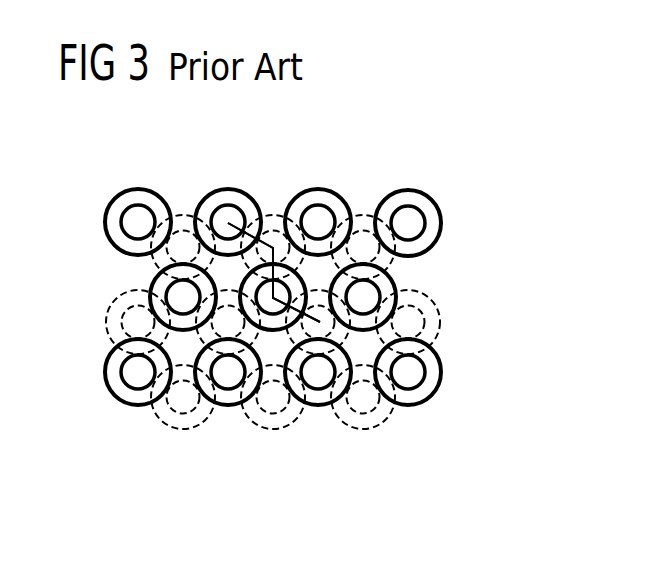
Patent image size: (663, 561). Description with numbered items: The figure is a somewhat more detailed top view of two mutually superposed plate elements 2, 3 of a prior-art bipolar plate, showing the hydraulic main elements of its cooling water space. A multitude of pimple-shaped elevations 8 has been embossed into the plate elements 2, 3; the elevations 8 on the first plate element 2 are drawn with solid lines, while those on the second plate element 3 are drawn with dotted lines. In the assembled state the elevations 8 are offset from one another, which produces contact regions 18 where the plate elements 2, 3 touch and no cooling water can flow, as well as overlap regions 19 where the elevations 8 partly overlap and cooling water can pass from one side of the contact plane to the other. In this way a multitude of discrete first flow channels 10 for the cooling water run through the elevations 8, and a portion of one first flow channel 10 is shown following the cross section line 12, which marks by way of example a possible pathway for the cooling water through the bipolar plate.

The first plate element 2 is at (306, 258).
The second plate element 3 is at (441, 321).
The elevation 8 is at (138, 189).
The first flow channel 10 is at (228, 223).
The cross section line 12 is at (274, 272).
The contact region 18 is at (182, 351).
The overlap region 19 is at (207, 388).